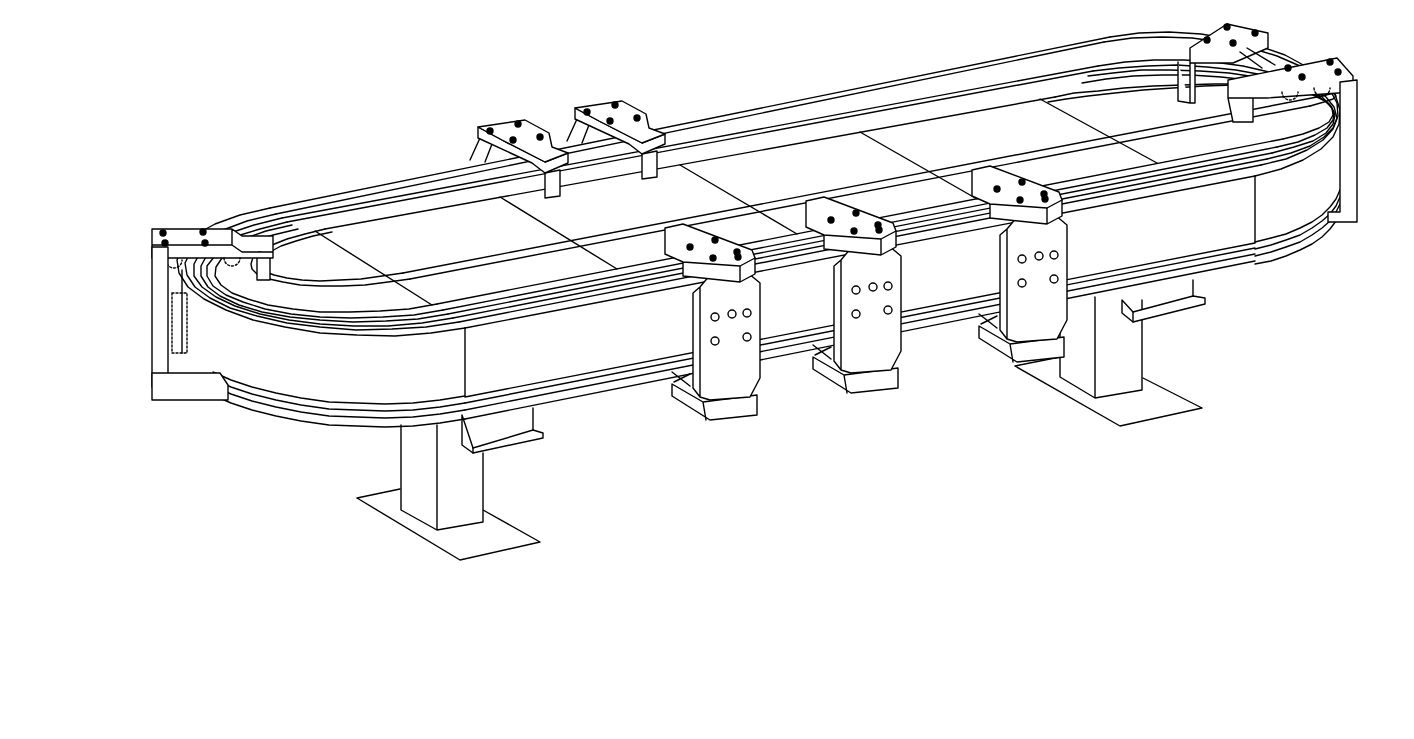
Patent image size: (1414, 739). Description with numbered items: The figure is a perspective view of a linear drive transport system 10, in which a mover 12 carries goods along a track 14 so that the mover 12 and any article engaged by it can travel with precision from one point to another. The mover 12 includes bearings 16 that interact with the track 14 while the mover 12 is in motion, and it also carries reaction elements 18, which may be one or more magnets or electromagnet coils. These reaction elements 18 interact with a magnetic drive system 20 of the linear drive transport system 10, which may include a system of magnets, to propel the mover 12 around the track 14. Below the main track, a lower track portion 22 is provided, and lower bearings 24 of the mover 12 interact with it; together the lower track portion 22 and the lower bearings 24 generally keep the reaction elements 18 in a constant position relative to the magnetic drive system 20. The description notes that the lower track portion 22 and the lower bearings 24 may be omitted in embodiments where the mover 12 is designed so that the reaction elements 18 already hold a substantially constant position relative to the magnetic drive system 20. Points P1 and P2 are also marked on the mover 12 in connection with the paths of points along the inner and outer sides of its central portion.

The linear drive transport system 10 is at (432, 90).
The mover 12 is at (205, 229).
The track 14 is at (1262, 190).
The bearings 16 is at (172, 274).
The reaction elements 18 is at (175, 325).
The magnetic drive system 20 is at (543, 357).
The lower track portion 22 is at (305, 415).
The lower bearings 24 is at (692, 388).
The point P1 is at (752, 256).
The point P2 is at (668, 230).